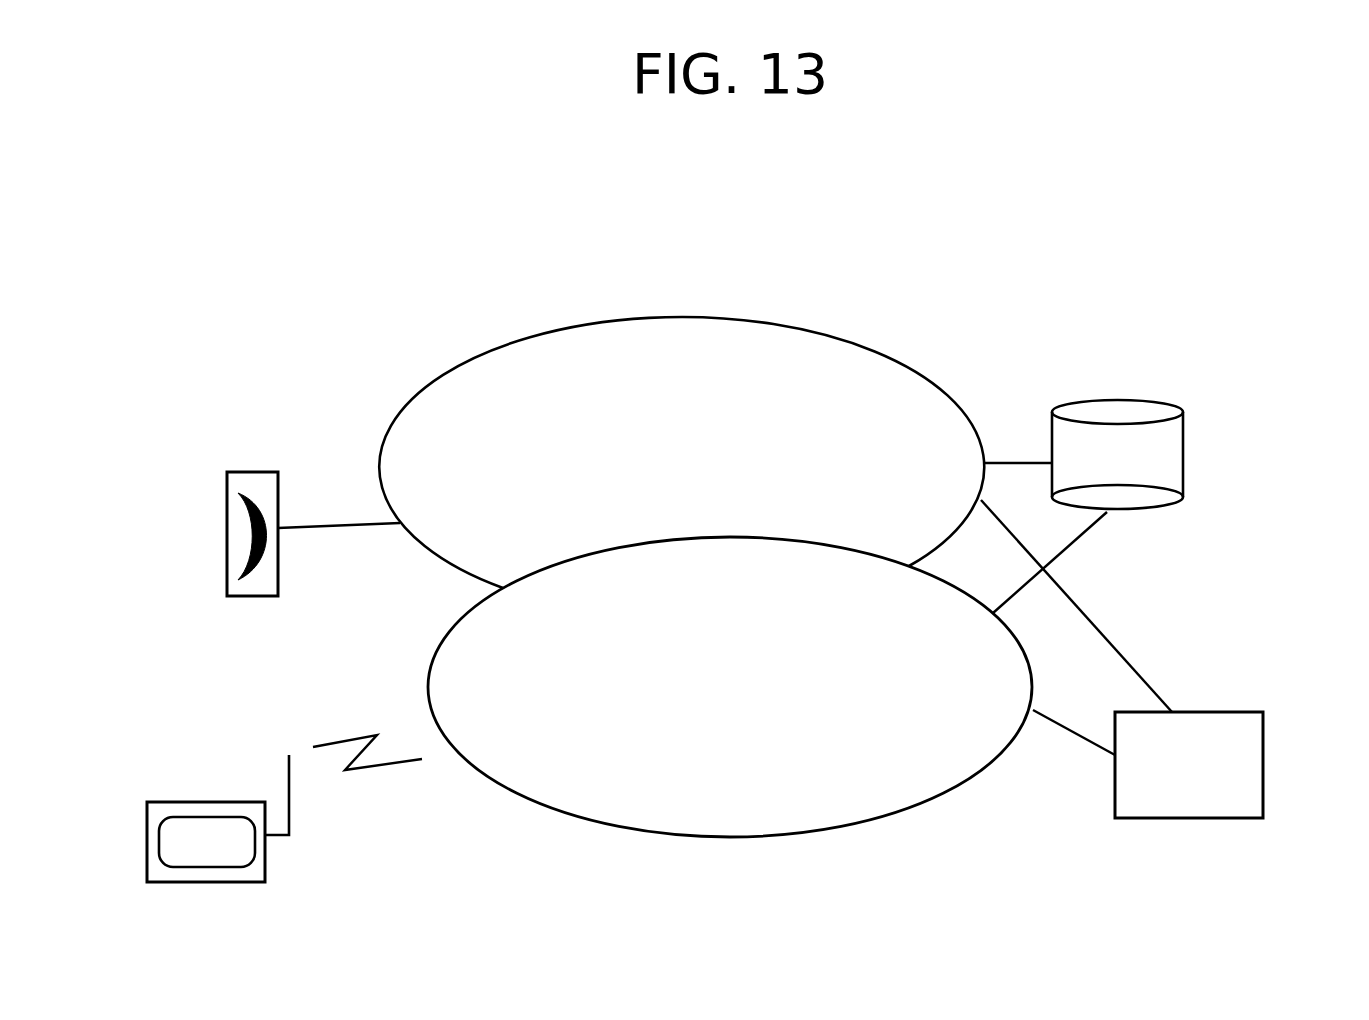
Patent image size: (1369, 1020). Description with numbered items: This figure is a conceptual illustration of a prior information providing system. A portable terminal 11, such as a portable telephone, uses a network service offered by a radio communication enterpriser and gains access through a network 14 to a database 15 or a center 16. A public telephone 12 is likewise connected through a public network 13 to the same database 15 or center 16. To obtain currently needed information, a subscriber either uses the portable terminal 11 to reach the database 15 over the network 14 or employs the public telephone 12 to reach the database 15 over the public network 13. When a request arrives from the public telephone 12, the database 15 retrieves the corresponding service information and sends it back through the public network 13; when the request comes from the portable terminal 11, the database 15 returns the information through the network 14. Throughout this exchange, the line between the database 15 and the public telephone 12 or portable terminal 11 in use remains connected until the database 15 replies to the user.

The portable terminal 11 is at (188, 883).
The public telephone 12 is at (243, 598).
The public network 13 is at (767, 323).
The network 14 is at (740, 840).
The database 15 is at (1117, 410).
The center 16 is at (1265, 770).